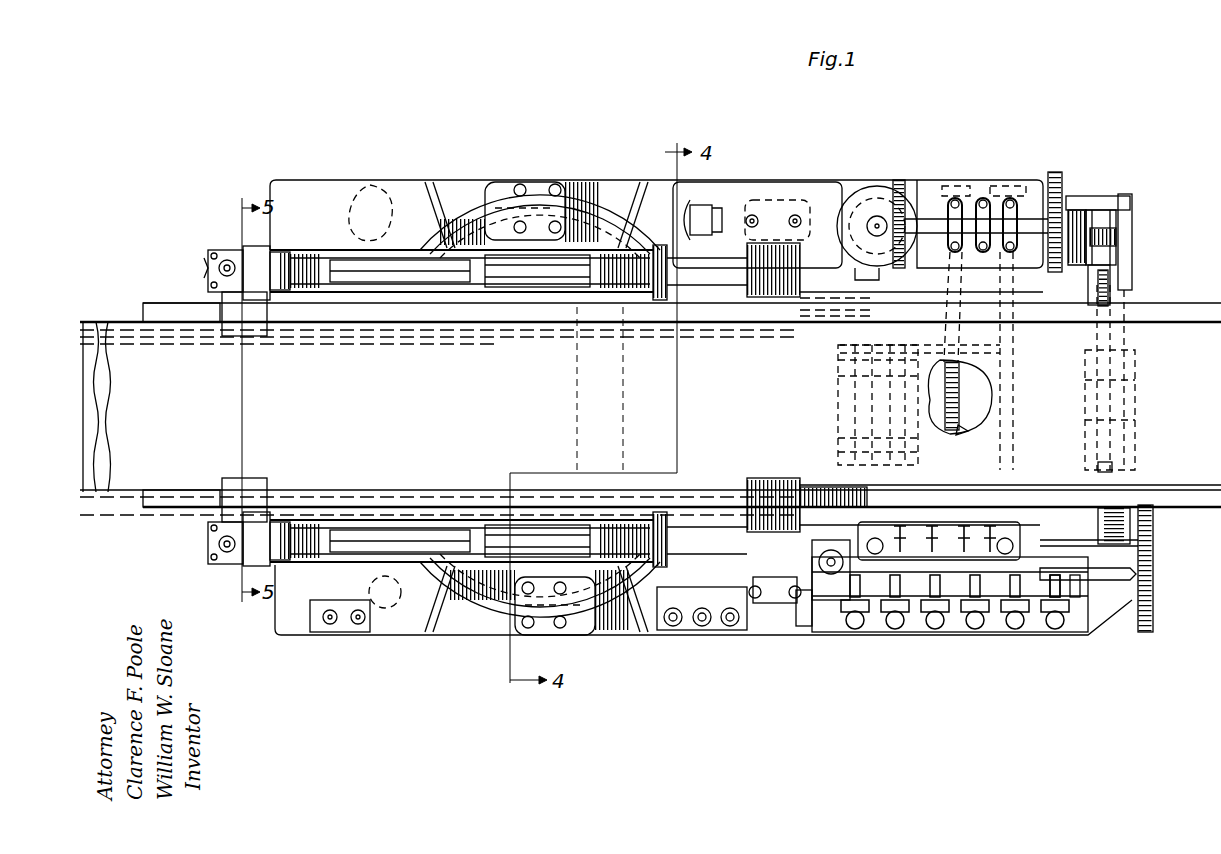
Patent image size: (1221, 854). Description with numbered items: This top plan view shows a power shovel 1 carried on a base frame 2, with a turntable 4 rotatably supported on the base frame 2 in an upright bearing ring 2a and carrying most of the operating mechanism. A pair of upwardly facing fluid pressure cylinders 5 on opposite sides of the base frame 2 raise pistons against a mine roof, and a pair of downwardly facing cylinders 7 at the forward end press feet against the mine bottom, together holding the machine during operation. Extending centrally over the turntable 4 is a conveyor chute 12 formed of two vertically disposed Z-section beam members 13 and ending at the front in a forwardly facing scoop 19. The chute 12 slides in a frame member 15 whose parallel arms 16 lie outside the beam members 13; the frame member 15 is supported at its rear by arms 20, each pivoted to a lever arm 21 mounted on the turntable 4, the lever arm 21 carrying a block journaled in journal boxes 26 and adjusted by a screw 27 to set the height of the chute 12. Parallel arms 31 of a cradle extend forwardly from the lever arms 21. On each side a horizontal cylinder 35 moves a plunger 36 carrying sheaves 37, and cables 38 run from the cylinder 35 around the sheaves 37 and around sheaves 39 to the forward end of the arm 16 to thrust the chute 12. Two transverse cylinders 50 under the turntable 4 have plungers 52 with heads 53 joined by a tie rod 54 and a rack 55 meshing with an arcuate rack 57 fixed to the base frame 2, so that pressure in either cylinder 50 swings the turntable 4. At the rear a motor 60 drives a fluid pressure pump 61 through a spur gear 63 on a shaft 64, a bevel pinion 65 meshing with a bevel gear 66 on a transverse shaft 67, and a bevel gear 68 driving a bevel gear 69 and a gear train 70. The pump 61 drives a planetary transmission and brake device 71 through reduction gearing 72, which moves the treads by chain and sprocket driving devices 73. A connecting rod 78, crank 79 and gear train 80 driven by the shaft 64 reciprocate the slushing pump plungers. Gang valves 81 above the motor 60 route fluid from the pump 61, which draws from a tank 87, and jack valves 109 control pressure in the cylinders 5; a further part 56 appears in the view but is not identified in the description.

The power shovel 1 is at (205, 268).
The base frame 2 is at (440, 182).
The upright bearing ring 2a is at (462, 180).
The turntable 4 is at (472, 210).
The fluid pressure cylinders 5 is at (546, 186).
The fluid pressure cylinders 7 is at (362, 184).
The conveyor chute 12 is at (152, 307).
The beam members 13 is at (188, 490).
The frame member 15 is at (1135, 362).
The parallel arms 16 is at (411, 322).
The scoop 19 is at (97, 322).
The arms 20 is at (738, 475).
The lever arm 21 is at (652, 243).
The journal boxes 26 is at (790, 200).
The screw 27 is at (832, 632).
The parallel arms 31 is at (216, 300).
The cylinder 35 is at (288, 292).
The plunger 36 is at (528, 292).
The sheaves 37 is at (660, 300).
The cables 38 is at (332, 252).
The sheaves 39 is at (284, 520).
The cylinders 50 is at (988, 400).
The plunger 52 is at (1003, 300).
The head 53 is at (1010, 196).
The tie rod 54 is at (1002, 348).
The rack 55 is at (947, 280).
The cam follower 56 is at (962, 380).
The arcuate shaped rack 57 is at (965, 432).
The motor 60 is at (850, 602).
The fluid pressure pump 61 is at (983, 195).
The spur gear 63 is at (1058, 634).
The shaft 64 is at (1145, 632).
The bevel pinion 65 is at (1084, 634).
The bevel gear 66 is at (1140, 572).
The transverse shaft 67 is at (1108, 290).
The bevel gear 68 is at (1112, 240).
The bevel gear 69 is at (1080, 196).
The gear train 70 is at (1056, 178).
The planetary transmission and brake device 71 is at (838, 412).
The reduction gearing 72 is at (877, 186).
The chain and sprocket driving devices 73 is at (826, 487).
The connecting rod 78 is at (1110, 470).
The crank 79 is at (1155, 541).
The gear train 80 is at (1155, 515).
The gang valves 81 is at (938, 632).
The tank 87 is at (766, 182).
The jack valves 109 is at (678, 632).